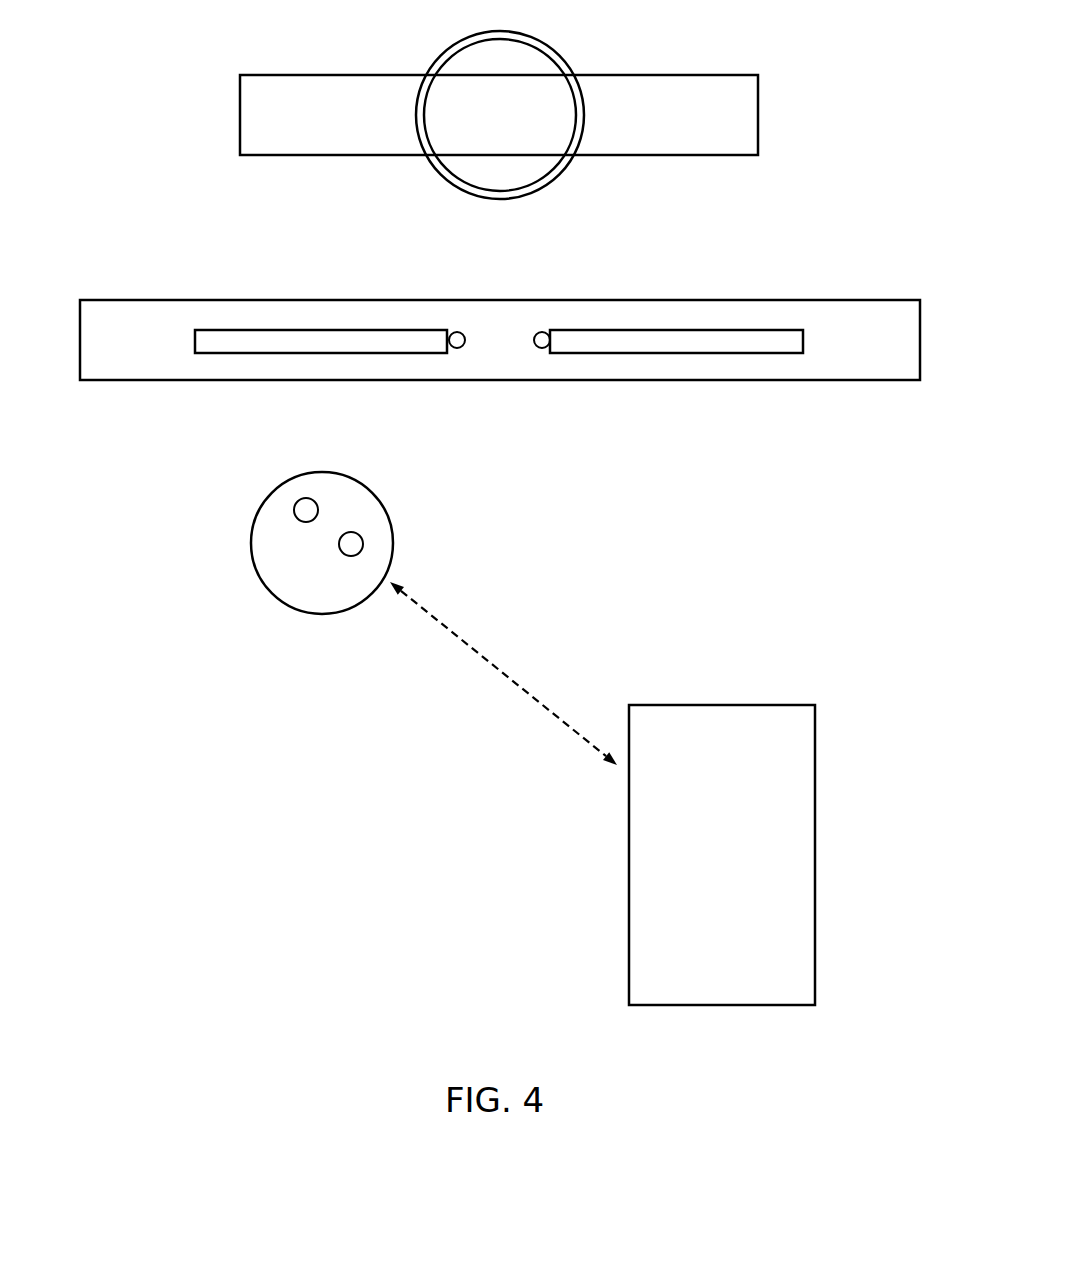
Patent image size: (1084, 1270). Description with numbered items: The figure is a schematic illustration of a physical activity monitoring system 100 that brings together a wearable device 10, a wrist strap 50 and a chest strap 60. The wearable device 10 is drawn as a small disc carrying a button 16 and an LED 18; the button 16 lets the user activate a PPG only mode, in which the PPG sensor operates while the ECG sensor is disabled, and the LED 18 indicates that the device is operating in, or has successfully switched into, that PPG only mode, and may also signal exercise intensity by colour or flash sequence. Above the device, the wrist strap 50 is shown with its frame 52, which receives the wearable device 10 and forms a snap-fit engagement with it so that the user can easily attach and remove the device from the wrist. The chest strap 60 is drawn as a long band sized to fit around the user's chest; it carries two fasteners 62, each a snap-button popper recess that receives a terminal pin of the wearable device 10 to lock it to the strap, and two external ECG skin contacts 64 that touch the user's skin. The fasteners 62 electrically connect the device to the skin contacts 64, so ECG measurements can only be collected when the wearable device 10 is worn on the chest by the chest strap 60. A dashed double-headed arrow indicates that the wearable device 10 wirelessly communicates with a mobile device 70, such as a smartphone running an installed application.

The wearable device 10 is at (306, 578).
The button 16 is at (351, 545).
The LED 18 is at (306, 510).
The wrist strap 50 is at (735, 105).
The frame 52 is at (565, 61).
The chest strap 60 is at (873, 362).
The fasteners 62 is at (539, 333).
The external ECG skin contacts 64 is at (590, 355).
The mobile device 70 is at (744, 963).
The physical activity monitoring system 100 is at (274, 739).